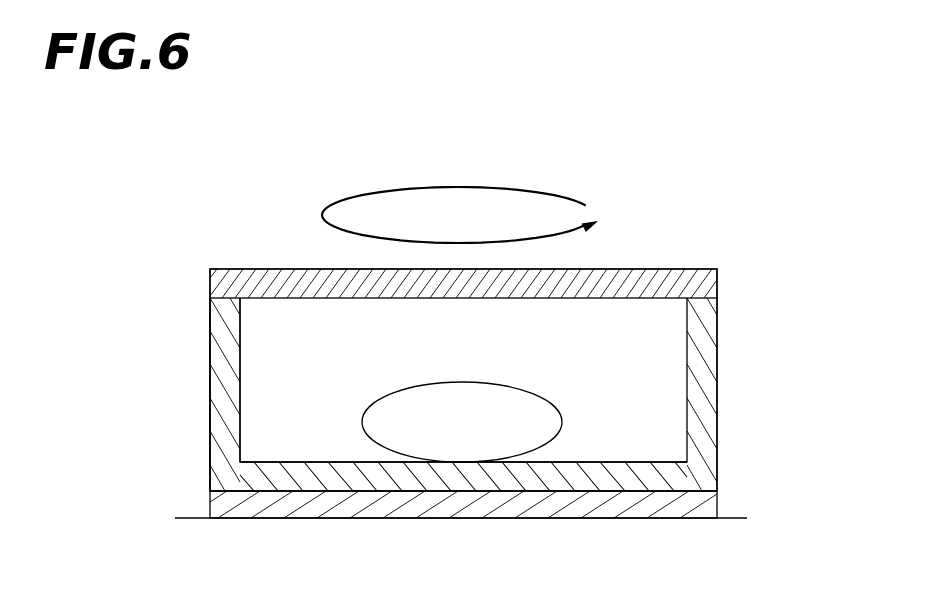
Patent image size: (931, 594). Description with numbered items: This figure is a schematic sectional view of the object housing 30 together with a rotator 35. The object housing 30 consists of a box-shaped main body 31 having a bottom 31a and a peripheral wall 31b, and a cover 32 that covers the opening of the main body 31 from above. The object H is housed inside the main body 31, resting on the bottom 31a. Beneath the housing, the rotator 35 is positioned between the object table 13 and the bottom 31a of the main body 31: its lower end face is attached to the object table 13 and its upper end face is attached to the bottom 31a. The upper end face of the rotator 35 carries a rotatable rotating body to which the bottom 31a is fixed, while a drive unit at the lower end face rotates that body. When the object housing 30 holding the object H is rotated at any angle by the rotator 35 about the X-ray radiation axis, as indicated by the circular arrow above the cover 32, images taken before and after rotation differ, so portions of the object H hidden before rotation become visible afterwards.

The object housing 30 is at (655, 266).
The main body 31 is at (718, 341).
The bottom 31a is at (450, 480).
The peripheral wall 31b is at (210, 405).
The cover 32 is at (266, 272).
The rotator 35 is at (210, 511).
The object table 13 is at (722, 516).
The object H is at (536, 410).